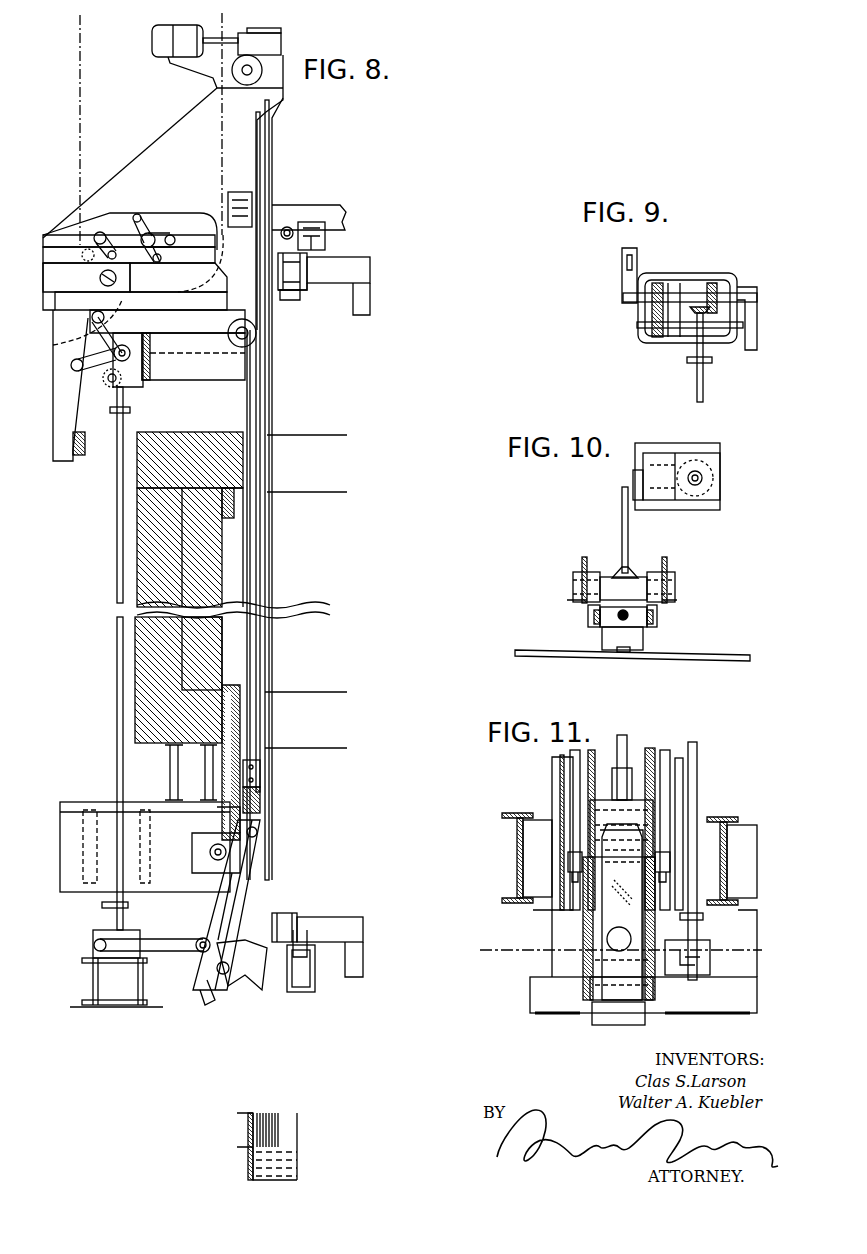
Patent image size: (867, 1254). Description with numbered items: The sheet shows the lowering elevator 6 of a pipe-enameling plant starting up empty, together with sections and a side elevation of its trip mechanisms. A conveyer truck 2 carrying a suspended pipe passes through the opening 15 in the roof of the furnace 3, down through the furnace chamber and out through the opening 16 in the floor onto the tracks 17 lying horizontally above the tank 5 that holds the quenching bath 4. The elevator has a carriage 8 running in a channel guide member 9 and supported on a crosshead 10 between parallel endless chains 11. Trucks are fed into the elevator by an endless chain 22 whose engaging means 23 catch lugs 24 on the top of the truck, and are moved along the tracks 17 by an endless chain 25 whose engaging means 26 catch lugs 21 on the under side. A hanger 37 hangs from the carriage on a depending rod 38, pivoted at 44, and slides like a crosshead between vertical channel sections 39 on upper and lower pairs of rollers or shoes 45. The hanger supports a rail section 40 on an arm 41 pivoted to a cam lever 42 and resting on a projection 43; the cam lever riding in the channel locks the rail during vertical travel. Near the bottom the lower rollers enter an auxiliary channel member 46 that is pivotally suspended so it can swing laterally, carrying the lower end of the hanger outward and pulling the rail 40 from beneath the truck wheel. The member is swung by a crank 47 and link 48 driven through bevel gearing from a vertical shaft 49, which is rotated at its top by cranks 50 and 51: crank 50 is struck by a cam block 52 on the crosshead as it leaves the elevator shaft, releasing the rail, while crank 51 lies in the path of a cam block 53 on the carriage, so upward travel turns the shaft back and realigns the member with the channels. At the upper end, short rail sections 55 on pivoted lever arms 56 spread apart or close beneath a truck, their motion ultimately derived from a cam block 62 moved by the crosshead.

In FIG. 8, the conveyer truck 2 is at (365, 259).
In FIG. 8, the furnace 3 is at (142, 547).
In FIG. 8, the quenching bath 4 is at (273, 1147).
In FIG. 8, the tank 5 is at (248, 1161).
In FIG. 8, the elevator 6 is at (282, 406).
In FIG. 8, the carriage 8 is at (157, 143).
In FIG. 8, the channel guide member 9 is at (127, 320).
In FIG. 8, the crosshead 10 is at (100, 279).
In FIG. 8, the endless chain 11 is at (82, 94).
In FIG. 8, the opening in the roof of the furnace 15 is at (307, 463).
In FIG. 8, the opening in the floor of the furnace 16 is at (306, 720).
In FIG. 8, the tracks 17 is at (291, 980).
In FIG. 10, the tracks 17 is at (722, 653).
In FIG. 8, the lug 21 is at (312, 284).
In FIG. 8, the endless chain 22 is at (317, 227).
In FIG. 8, the engaging means 23 is at (308, 268).
In FIG. 8, the lug 24 is at (312, 267).
In FIG. 8, the endless chain 25 is at (312, 970).
In FIG. 8, the engaging means 26 is at (306, 940).
In FIG. 8, the hanger 37 is at (248, 878).
In FIG. 10, the hanger 37 is at (638, 620).
In FIG. 11, the hanger 37 is at (608, 913).
In FIG. 8, the depending rod 38 is at (258, 551).
In FIG. 10, the depending rod 38 is at (626, 610).
In FIG. 11, the depending rod 38 is at (628, 750).
In FIG. 8, the vertical channel section 39 is at (266, 663).
In FIG. 10, the vertical channel section 39 is at (587, 607).
In FIG. 11, the vertical channel section 39 is at (657, 755).
In FIG. 8, the rail section 40 is at (272, 960).
In FIG. 10, the rail section 40 is at (623, 652).
In FIG. 8, the arm 41 is at (245, 952).
In FIG. 10, the arm 41 is at (607, 636).
In FIG. 8, the cam lever 42 is at (204, 1001).
In FIG. 11, the cam lever 42 is at (603, 1017).
In FIG. 8, the projection 43 is at (243, 976).
In FIG. 8, the pivot 44 is at (210, 855).
In FIG. 11, the pivot 44 is at (670, 863).
In FIG. 8, the roller or shoe 45 is at (261, 818).
In FIG. 10, the roller or shoe 45 is at (590, 620).
In FIG. 11, the roller or shoe 45 is at (595, 808).
In FIG. 8, the auxiliary channel member 46 is at (218, 908).
In FIG. 11, the auxiliary channel member 46 is at (588, 959).
In FIG. 8, the crank 47 is at (90, 938).
In FIG. 10, the crank 47 is at (633, 481).
In FIG. 8, the link 48 is at (178, 953).
In FIG. 10, the link 48 is at (622, 518).
In FIG. 8, the vertical shaft 49 is at (115, 701).
In FIG. 9, the vertical shaft 49 is at (695, 372).
In FIG. 10, the vertical shaft 49 is at (703, 477).
In FIG. 11, the vertical shaft 49 is at (697, 788).
In FIG. 8, the crank 50 is at (85, 338).
In FIG. 9, the crank 50 is at (622, 275).
In FIG. 8, the crank 51 is at (92, 370).
In FIG. 8, the cam block 52 is at (115, 316).
In FIG. 8, the cam block 53 is at (85, 452).
In FIG. 8, the short rail section 55 is at (287, 293).
In FIG. 8, the pivoted lever arm 56 is at (277, 313).
In FIG. 8, the cam block 62 is at (125, 245).